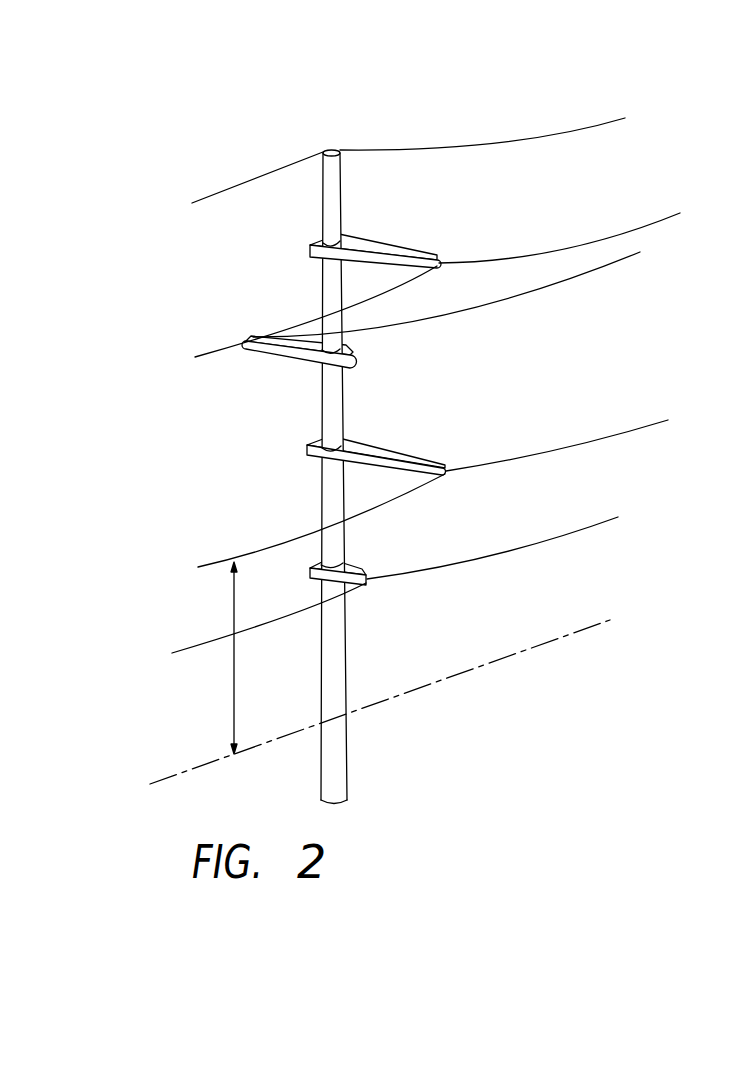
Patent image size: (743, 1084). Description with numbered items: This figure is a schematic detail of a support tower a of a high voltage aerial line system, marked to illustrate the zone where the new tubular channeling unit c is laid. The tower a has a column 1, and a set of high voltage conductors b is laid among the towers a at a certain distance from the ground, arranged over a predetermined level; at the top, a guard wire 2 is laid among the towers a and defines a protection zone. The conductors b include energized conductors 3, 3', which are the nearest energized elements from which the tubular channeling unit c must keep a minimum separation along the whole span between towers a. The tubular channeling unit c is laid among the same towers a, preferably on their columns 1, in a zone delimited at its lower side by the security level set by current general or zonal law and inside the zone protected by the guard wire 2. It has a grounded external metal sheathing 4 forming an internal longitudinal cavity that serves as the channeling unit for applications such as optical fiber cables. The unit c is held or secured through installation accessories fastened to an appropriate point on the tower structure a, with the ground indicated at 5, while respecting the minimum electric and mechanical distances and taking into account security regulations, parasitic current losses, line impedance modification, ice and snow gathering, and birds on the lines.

The column 1 is at (374, 477).
The guard wire 2 is at (423, 154).
The energized conductor 3 is at (573, 438).
The conductor 3' is at (559, 228).
The grounded external metal sheathing 4 is at (508, 542).
The ground line 5 is at (471, 669).
The support tower a is at (370, 753).
The high voltage conductors b is at (440, 478).
The tubular channeling unit c is at (554, 528).